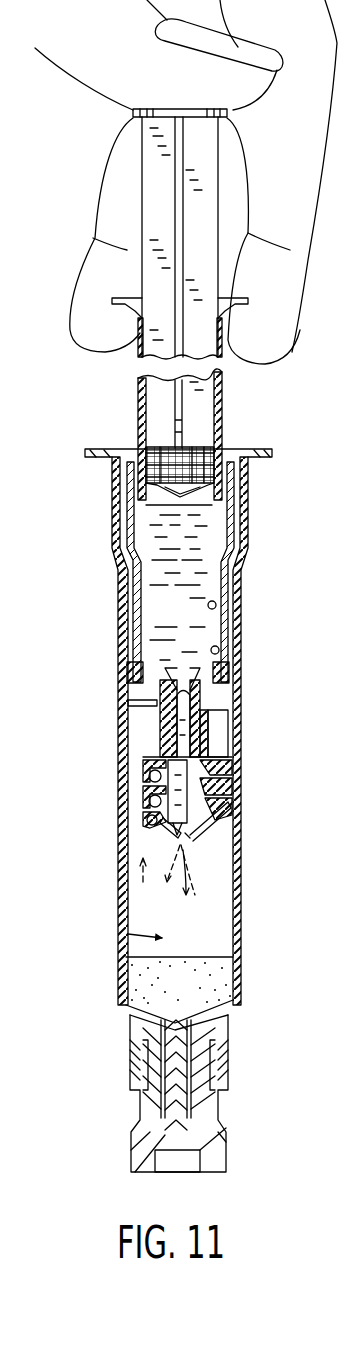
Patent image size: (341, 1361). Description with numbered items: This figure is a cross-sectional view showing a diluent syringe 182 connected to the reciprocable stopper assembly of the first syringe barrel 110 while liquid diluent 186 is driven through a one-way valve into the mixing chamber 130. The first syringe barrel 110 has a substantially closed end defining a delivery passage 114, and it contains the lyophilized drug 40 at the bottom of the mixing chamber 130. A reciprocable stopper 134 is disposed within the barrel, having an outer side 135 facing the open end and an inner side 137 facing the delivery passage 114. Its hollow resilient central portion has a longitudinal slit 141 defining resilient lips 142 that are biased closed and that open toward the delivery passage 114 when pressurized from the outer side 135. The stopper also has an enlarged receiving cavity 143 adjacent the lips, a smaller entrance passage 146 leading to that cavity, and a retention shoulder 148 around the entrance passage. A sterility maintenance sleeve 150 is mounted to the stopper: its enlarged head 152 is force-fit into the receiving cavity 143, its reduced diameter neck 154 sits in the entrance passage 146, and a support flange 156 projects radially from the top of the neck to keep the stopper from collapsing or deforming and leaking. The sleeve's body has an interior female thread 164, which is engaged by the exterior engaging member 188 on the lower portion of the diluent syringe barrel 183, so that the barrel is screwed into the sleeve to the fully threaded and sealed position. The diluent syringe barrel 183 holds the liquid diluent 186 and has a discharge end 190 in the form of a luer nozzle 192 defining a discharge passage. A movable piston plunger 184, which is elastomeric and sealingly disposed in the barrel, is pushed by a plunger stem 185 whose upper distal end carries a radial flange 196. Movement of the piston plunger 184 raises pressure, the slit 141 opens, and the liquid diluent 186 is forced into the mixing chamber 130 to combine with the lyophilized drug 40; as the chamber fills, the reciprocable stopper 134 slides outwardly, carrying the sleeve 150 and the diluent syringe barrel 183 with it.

The radial flange 196 is at (132, 117).
The plunger stem 185 is at (224, 216).
The diluent syringe 182 is at (232, 410).
The movable piston plunger 184 is at (222, 462).
The first syringe barrel 110 is at (246, 965).
The liquid diluent 186 is at (200, 615).
The diluent syringe barrel 183 is at (218, 607).
The interior female thread 164 is at (218, 653).
The luer nozzle 192 is at (160, 672).
The exterior engaging member 188 is at (232, 681).
The discharge end 190 is at (165, 738).
The sterility maintenance sleeve 150 is at (215, 723).
The support flange 156 is at (208, 762).
The reduced diameter neck 154 is at (205, 782).
The enlarged head 152 is at (225, 805).
The outer side 135 is at (140, 770).
The smaller entrance passage 146 is at (140, 785).
The retention shoulder 148 is at (140, 815).
The enlarged receiving cavity 143 is at (147, 835).
The inner side 137 is at (215, 835).
The resilient lips 142 is at (172, 830).
The reciprocable stopper 134 is at (215, 841).
The longitudinal slit 141 is at (200, 848).
The mixing chamber 130 is at (130, 933).
The lyophilized drug 40 is at (179, 980).
The delivery passage 114 is at (225, 1000).